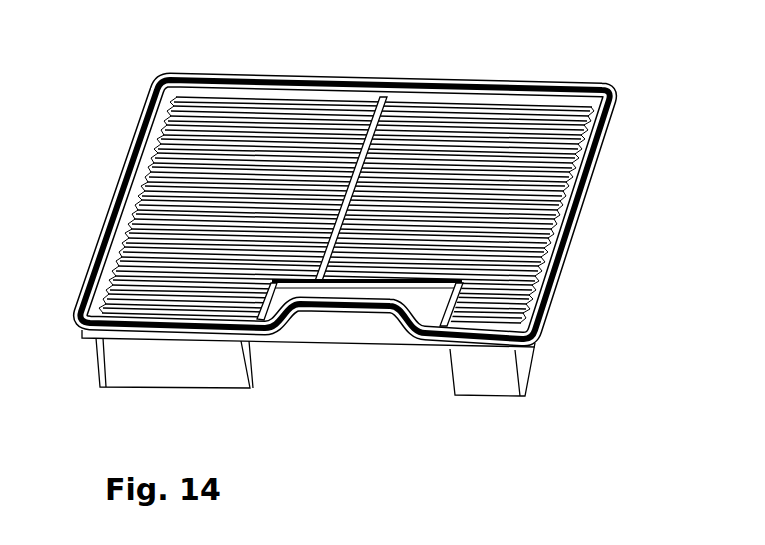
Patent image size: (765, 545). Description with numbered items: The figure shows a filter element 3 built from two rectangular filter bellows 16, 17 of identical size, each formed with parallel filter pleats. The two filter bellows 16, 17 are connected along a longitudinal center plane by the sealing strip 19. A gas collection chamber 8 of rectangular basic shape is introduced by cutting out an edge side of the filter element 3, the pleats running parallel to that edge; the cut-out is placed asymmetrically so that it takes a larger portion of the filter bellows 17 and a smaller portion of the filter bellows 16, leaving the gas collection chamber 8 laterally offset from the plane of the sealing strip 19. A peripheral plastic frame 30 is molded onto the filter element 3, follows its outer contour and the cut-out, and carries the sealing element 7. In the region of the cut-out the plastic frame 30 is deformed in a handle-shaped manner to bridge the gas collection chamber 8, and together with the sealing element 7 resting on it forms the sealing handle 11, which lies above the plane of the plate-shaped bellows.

The filter element 3 is at (150, 55).
The sealing element 7 is at (96, 264).
The gas collection chamber 8 is at (357, 372).
The sealing handle 11 is at (321, 305).
The filter bellows 16 is at (222, 108).
The filter bellows 17 is at (436, 118).
The sealing strip 19 is at (371, 125).
The plastic frame 30 is at (84, 336).